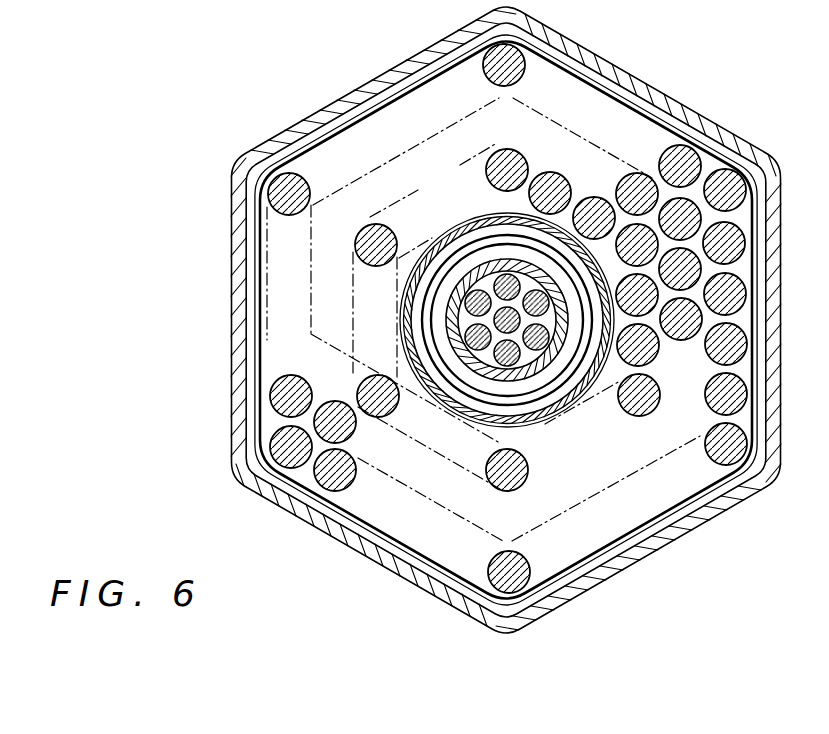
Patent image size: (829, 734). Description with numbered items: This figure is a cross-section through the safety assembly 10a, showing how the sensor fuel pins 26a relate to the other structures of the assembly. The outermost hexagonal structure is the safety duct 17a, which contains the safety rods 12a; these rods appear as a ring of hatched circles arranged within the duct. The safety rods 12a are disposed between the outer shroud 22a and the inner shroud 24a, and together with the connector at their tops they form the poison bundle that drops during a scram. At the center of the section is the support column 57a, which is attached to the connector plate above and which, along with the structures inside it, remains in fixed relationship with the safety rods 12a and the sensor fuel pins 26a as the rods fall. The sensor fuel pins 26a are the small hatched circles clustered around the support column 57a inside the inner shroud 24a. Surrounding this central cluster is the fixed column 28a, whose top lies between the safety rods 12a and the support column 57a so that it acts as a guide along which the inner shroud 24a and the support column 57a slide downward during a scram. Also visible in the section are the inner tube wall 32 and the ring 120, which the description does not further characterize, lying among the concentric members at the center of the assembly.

The safety assembly 10a is at (617, 48).
The safety rods 12a is at (515, 50).
The safety duct 17a is at (658, 90).
The outer shroud 22a is at (738, 163).
The inner shroud 24a is at (498, 430).
The sensor fuel pins 26a is at (495, 277).
The fixed column 28a is at (567, 370).
The inner tube wall 32 is at (459, 316).
The central support column 57a is at (465, 306).
The spacer tube 120 is at (530, 387).